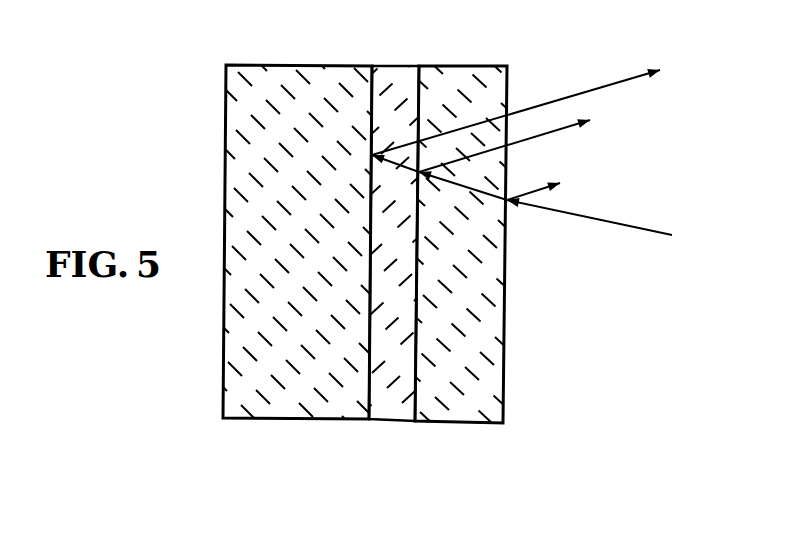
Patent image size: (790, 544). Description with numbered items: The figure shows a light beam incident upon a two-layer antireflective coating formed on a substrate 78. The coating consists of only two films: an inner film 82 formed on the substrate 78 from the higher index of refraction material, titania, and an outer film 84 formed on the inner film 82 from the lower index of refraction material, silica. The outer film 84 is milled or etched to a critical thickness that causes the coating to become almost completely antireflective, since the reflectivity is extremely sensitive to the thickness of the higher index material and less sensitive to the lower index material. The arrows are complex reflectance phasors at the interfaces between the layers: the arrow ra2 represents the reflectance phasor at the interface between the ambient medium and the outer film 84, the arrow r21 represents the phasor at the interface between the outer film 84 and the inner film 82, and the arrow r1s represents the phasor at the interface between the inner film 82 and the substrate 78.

The substrate 78 is at (254, 420).
The inner film 82 is at (383, 422).
The outer film 84 is at (445, 423).
The reflectance phasor at ambient-outer layer interface ra2 is at (535, 187).
The reflectance phasor at first layer-substrate interface r1s is at (597, 88).
The reflectance phasor at second layer-first layer interface r21 is at (562, 131).